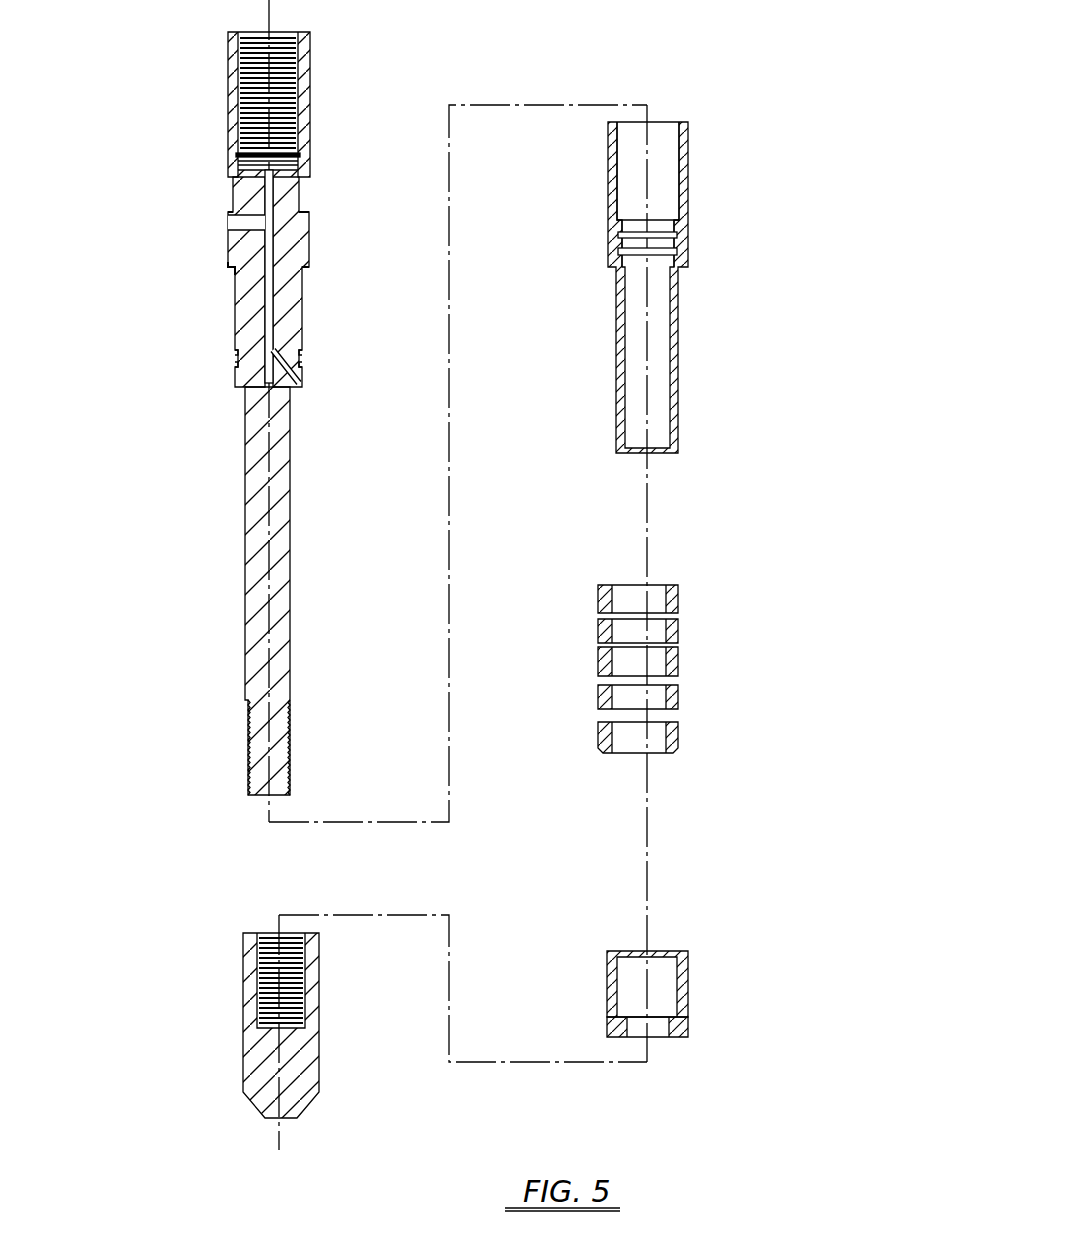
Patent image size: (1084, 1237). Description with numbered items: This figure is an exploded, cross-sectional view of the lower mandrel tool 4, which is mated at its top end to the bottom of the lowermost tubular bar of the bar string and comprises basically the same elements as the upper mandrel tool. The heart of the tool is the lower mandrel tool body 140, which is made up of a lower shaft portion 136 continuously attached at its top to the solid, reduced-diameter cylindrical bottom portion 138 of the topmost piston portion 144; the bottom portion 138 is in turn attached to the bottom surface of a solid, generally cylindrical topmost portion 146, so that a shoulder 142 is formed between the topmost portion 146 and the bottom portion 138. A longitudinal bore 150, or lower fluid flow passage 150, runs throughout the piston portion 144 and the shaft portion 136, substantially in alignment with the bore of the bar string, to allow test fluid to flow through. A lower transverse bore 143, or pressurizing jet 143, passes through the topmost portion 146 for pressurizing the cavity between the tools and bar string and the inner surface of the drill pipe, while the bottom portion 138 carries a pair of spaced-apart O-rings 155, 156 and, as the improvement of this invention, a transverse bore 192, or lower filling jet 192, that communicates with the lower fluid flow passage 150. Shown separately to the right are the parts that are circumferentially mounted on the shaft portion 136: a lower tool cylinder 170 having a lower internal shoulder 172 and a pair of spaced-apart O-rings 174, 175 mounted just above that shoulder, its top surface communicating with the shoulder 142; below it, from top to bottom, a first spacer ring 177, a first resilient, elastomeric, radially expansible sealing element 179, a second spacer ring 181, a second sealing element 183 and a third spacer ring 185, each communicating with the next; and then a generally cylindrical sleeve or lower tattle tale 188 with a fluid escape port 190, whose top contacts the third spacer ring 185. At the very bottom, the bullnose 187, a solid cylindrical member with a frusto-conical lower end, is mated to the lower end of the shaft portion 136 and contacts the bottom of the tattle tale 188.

The lower mandrel tool 4 is at (607, 88).
The lower shaft portion 136 is at (288, 637).
The bottom portion 138 is at (290, 343).
The lower mandrel tool body 140 is at (243, 583).
The shoulder 142 is at (232, 272).
The lower transverse bore 143 is at (228, 222).
The topmost piston portion 144 is at (308, 306).
The topmost portion 146 is at (300, 238).
The longitudinal bore 150 is at (270, 276).
The O-ring 155 is at (236, 352).
The O-ring 156 is at (236, 368).
The lower tool cylinder 170 is at (683, 234).
The lower internal shoulder 172 is at (620, 232).
The O-ring 174 is at (686, 238).
The O-ring 175 is at (686, 256).
The first spacer ring 177 is at (680, 598).
The first sealing element 179 is at (680, 630).
The second spacer ring 181 is at (680, 660).
The second sealing element 183 is at (680, 697).
The third spacer ring 185 is at (680, 737).
The bullnose 187 is at (310, 1080).
The lower tattle tale 188 is at (688, 995).
The fluid escape port 190 is at (688, 1012).
The lower filling jet 192 is at (300, 385).